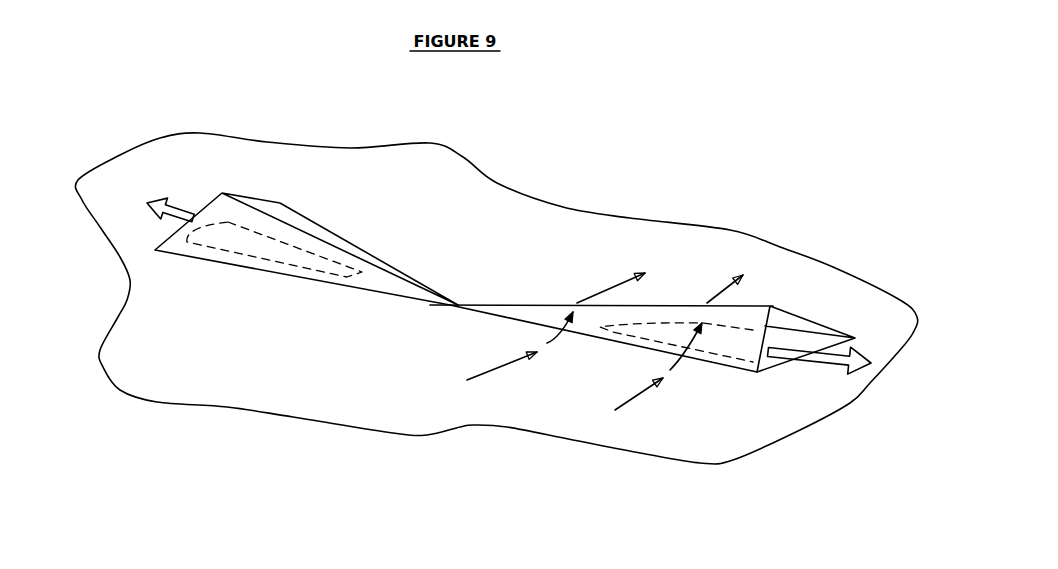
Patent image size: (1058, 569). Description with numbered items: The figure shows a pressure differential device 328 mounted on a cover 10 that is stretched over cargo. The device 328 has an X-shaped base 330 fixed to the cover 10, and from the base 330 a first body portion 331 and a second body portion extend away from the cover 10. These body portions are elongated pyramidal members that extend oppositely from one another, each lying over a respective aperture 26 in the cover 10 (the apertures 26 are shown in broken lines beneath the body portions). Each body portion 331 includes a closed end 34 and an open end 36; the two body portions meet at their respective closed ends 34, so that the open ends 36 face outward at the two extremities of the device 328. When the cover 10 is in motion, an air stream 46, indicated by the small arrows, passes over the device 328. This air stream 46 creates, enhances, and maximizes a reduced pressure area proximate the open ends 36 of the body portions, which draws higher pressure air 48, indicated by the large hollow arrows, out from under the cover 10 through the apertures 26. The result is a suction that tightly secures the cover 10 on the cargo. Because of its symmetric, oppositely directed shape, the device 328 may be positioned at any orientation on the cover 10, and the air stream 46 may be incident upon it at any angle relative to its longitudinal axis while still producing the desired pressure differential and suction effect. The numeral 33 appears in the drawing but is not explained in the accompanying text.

The cover 10 is at (120, 157).
The apertures 26 is at (327, 267).
The flap 33 is at (677, 303).
The closed end 34 is at (437, 289).
The open end 36 is at (215, 195).
The air stream 46 is at (638, 273).
The higher pressure air 48 is at (150, 192).
The pressure differential device 328 is at (294, 200).
The X-shaped base 330 is at (240, 272).
The first body portion 331 is at (335, 232).